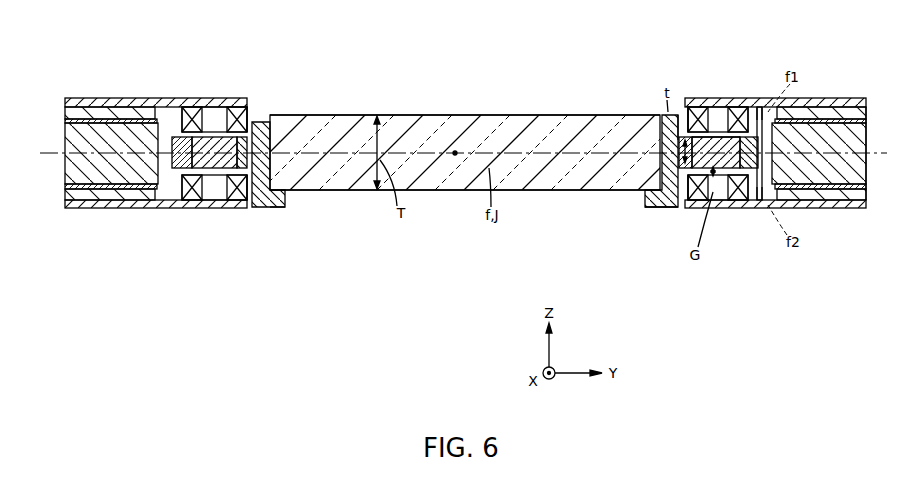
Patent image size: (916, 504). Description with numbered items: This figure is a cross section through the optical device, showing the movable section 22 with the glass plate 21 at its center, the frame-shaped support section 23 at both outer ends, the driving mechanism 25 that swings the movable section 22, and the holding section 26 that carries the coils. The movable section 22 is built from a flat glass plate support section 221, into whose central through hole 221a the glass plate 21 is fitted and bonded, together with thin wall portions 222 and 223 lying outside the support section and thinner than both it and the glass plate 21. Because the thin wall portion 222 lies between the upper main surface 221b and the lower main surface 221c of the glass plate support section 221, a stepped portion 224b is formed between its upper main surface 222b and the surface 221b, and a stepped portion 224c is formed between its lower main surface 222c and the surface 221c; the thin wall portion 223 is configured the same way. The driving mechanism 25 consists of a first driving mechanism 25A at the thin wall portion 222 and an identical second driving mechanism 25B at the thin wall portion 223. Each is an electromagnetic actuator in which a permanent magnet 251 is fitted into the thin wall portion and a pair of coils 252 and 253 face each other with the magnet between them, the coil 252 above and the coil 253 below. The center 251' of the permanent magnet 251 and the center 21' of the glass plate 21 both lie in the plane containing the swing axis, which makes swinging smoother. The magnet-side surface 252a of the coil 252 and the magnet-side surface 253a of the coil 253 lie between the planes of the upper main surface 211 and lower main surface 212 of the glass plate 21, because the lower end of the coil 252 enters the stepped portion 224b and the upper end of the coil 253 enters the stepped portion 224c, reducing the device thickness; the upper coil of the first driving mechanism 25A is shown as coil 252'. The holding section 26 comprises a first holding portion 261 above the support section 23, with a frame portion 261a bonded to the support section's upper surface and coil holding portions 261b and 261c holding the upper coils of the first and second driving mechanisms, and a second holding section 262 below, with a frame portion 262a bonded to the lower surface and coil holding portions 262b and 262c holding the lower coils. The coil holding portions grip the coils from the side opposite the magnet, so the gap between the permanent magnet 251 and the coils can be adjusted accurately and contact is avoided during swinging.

The glass plate 21 is at (472, 133).
The center of the glass plate 21' is at (453, 116).
The one main surface of the glass plate 211 is at (536, 113).
The other main surface of the glass plate 212 is at (541, 191).
The movable section 22 is at (273, 208).
The glass plate support section 221 is at (258, 123).
The through hole 221a is at (665, 112).
The one main surface of the glass plate support section 221b is at (670, 115).
The other main surface of the glass plate support section 221c is at (660, 207).
The thin wall portion 222 is at (745, 125).
The one main surface of the thin wall portion 222b is at (760, 112).
The other main surface of the thin wall portion 222c is at (758, 193).
The thin wall portion 223 is at (180, 137).
The stepped portion 224b is at (247, 120).
The stepped portion 224c is at (248, 192).
The support section 23 is at (72, 170).
The driving mechanism 25 is at (476, 142).
The first driving mechanism 25A is at (713, 83).
The second driving mechanism 25B is at (197, 83).
The permanent magnet 251 is at (466, 189).
The center of the permanent magnet 251' is at (719, 93).
The coil 252 is at (214, 93).
The upper coil (first unit) 252' is at (709, 83).
The surface of the coil 252a is at (698, 113).
The coil 253 is at (208, 190).
The surface of the coil 253a is at (743, 198).
The holding section 26 is at (793, 157).
The first holding portion 261 is at (850, 93).
The frame portion 261a is at (88, 112).
The coil holding portion 261b is at (830, 108).
The coil holding portion 261c is at (133, 100).
The second holding section 262 is at (803, 215).
The frame portion 262a is at (100, 197).
The coil holding portion 262b is at (836, 208).
The coil holding portion 262c is at (142, 208).